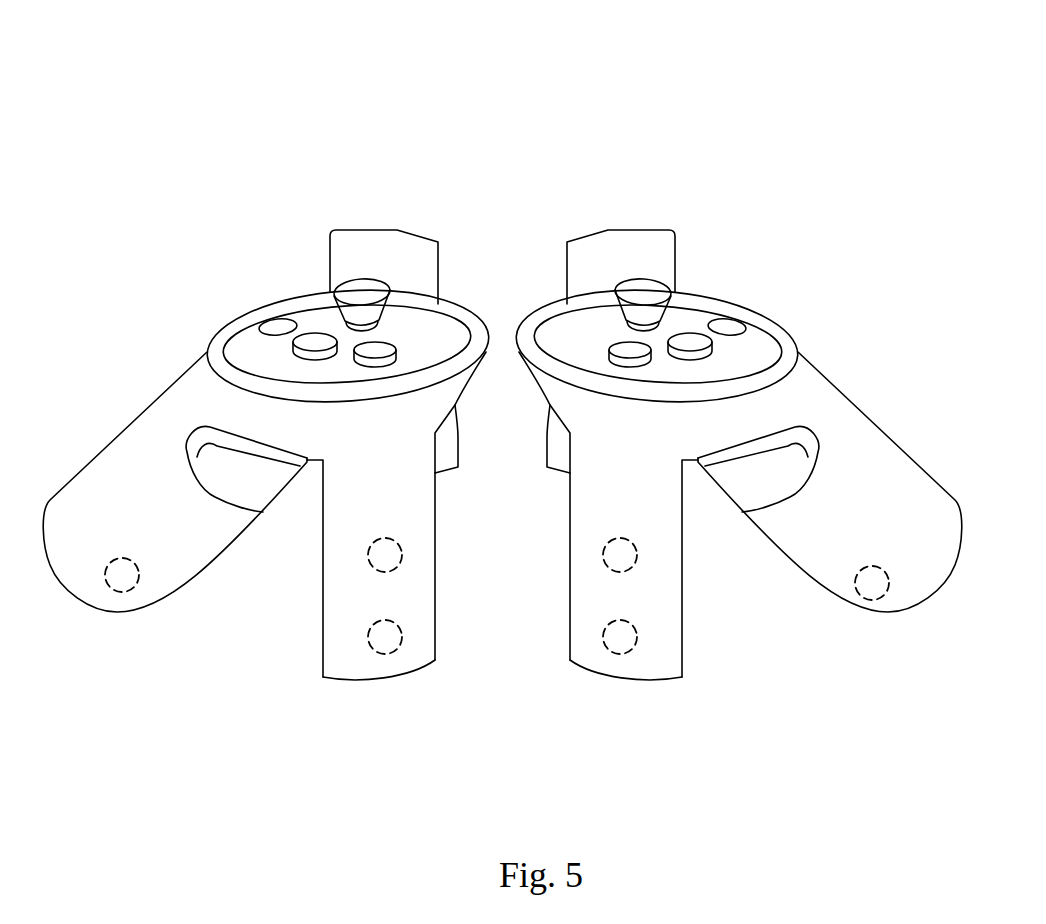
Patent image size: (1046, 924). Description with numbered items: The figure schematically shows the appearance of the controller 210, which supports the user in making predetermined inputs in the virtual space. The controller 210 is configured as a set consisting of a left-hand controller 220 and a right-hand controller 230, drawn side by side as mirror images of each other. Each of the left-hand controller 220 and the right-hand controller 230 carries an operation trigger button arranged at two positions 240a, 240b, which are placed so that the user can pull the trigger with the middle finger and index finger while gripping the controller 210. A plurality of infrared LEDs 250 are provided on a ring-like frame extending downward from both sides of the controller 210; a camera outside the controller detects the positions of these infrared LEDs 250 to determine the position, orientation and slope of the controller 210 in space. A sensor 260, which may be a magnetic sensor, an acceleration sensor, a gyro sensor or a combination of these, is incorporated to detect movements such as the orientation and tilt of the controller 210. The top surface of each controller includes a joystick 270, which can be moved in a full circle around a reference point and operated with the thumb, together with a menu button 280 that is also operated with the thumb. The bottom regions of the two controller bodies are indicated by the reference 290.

The controller 210 is at (518, 52).
The left-hand controller 220 is at (347, 192).
The right-hand controller 230 is at (658, 177).
The operation trigger button 240a is at (227, 468).
The operation trigger button 240b is at (556, 456).
The infrared LED 250 is at (608, 553).
The sensor 260 is at (123, 588).
The joystick 270 is at (353, 290).
The menu button 280 is at (313, 333).
The bottom of controller body 290 is at (608, 670).